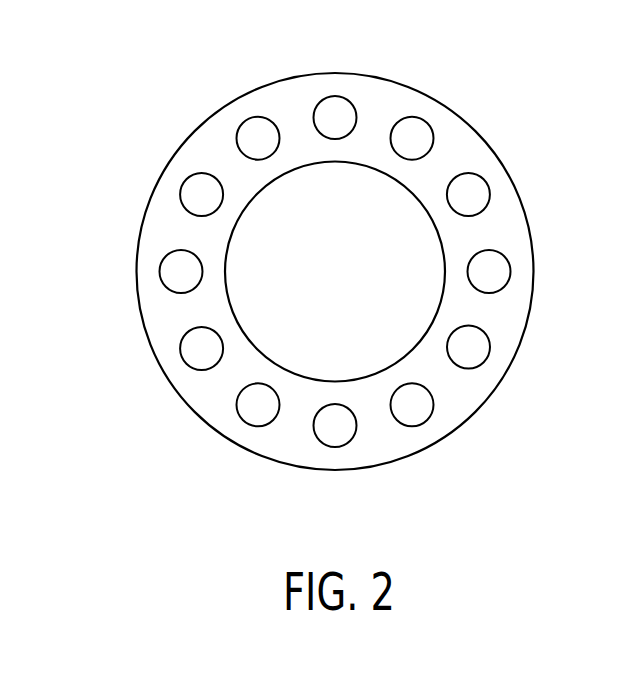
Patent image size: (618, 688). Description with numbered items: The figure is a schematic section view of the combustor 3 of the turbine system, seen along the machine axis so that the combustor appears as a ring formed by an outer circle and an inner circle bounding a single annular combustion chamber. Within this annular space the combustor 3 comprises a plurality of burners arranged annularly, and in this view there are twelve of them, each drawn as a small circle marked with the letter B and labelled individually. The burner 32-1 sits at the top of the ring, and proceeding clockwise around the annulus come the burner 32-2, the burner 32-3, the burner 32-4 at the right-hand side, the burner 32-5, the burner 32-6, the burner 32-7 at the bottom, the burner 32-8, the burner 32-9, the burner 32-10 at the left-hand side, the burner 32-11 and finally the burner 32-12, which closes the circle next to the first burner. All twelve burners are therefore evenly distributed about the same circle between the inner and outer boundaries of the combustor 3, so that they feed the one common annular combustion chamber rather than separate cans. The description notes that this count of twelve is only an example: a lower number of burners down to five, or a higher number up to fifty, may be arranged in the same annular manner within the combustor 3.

The combustor 3 is at (101, 145).
The burner 32-1 is at (350, 102).
The burner 32-2 is at (425, 121).
The burner 32-3 is at (486, 181).
The burner 32-4 is at (504, 255).
The burner 32-5 is at (485, 360).
The burner 32-6 is at (424, 423).
The burner 32-7 is at (349, 440).
The burner 32-8 is at (246, 423).
The burner 32-9 is at (183, 359).
The burner 32-10 is at (166, 255).
The burner 32-11 is at (184, 181).
The burner 32-12 is at (245, 121).